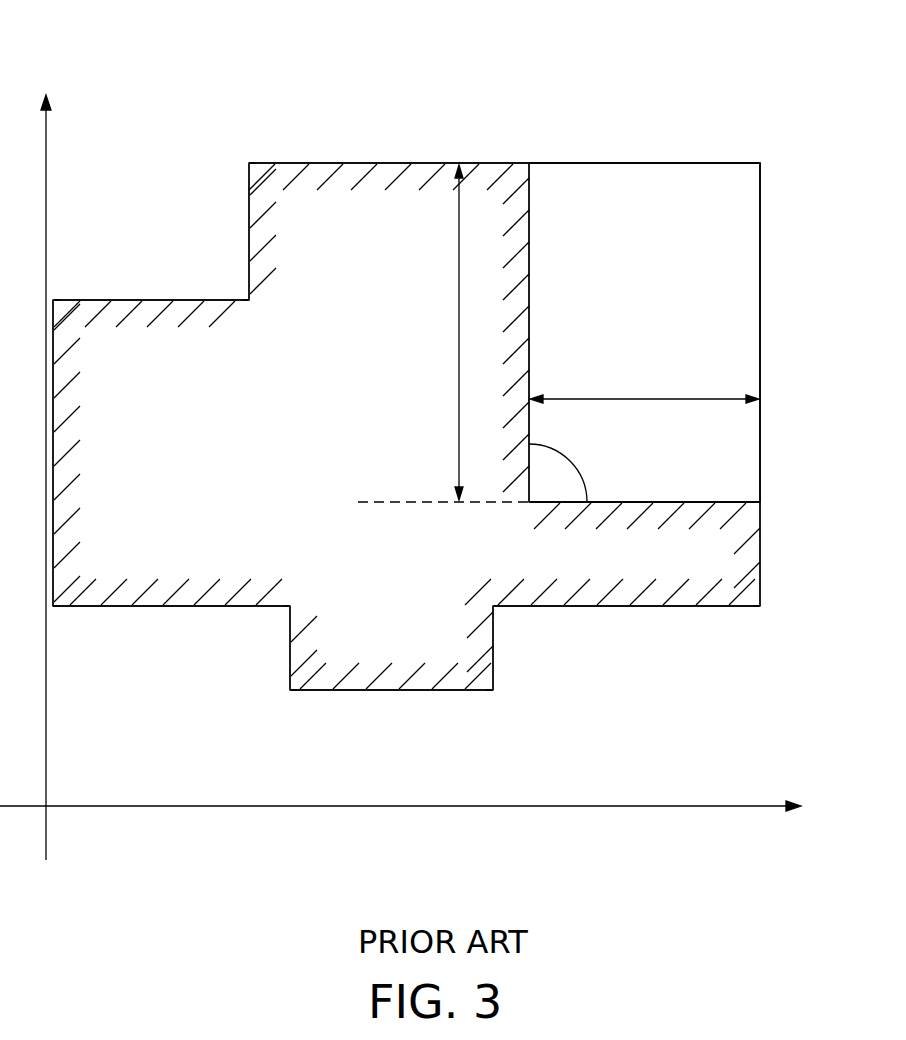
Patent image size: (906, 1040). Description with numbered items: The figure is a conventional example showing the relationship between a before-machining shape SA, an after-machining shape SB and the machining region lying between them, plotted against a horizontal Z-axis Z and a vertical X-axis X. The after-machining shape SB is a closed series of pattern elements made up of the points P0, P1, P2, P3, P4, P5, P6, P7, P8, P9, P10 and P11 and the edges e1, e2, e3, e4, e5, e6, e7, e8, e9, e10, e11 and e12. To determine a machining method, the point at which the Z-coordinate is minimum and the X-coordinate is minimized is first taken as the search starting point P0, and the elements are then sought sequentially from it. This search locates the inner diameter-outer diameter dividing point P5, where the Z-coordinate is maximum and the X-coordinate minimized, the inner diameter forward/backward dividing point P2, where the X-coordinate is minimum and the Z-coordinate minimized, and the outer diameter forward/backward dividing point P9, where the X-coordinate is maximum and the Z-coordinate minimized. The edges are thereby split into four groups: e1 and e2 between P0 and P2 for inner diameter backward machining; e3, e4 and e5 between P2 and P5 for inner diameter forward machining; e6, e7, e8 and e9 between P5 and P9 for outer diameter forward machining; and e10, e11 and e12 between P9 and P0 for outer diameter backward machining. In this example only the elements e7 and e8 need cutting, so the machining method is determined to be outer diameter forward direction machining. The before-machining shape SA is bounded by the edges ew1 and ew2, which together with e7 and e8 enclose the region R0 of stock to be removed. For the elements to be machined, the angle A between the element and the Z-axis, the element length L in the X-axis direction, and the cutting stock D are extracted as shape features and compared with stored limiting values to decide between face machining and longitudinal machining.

The X-axis X is at (35, 475).
The Z-axis Z is at (400, 826).
The search starting point P0 is at (67, 625).
The pattern element point P1 is at (270, 625).
The inner diameter forward/backward dividing point P2 is at (274, 709).
The pattern element point P3 is at (495, 709).
The pattern element point P4 is at (511, 621).
The inner diameter-outer diameter dividing point P5 is at (779, 621).
The pattern element point P6 is at (779, 507).
The pattern element point P7 is at (514, 519).
The pattern element point P8 is at (529, 149).
The outer diameter forward/backward dividing point P9 is at (233, 152).
The pattern element point P10 is at (222, 285).
The pattern element point P11 is at (74, 285).
The pattern element e1 is at (171, 592).
The pattern element e2 is at (307, 648).
The pattern element e3 is at (391, 679).
The pattern element e4 is at (473, 648).
The pattern element e5 is at (612, 590).
The pattern element e6 is at (738, 554).
The pattern element e7 is at (644, 519).
The pattern element e8 is at (505, 332).
The pattern element e9 is at (389, 183).
The pattern element e10 is at (281, 231).
The pattern element e11 is at (151, 319).
The pattern element e12 is at (83, 453).
The before-machining shape edge ew1 is at (792, 332).
The before-machining shape edge ew2 is at (644, 149).
The region to be machined R0 is at (644, 332).
The pattern element length L is at (449, 332).
The cutting stock D is at (644, 386).
The angle A is at (560, 473).
The before-machining shape SA is at (586, 163).
The after-machining shape SB is at (330, 163).